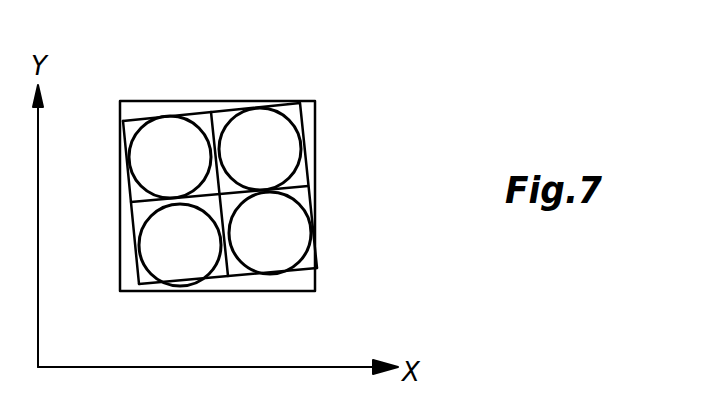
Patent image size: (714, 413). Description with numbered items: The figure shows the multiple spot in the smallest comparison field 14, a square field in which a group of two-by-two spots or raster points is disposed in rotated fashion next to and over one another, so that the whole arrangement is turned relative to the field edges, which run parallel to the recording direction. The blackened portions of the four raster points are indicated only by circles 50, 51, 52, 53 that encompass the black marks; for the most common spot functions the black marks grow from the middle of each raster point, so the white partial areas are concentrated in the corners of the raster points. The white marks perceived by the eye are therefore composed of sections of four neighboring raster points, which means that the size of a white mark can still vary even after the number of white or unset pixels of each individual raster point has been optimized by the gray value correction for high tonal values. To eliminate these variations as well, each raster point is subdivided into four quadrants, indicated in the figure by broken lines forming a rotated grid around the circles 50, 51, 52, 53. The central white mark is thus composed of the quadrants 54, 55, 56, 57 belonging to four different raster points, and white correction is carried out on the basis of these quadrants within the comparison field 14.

The smallest comparison field 14 is at (315, 167).
The circle encompassing black mark 50 is at (178, 262).
The circle encompassing black mark 51 is at (265, 258).
The circle encompassing black mark 52 is at (168, 138).
The circle encompassing black mark 53 is at (263, 123).
The quadrant 54 is at (147, 278).
The quadrant 55 is at (130, 195).
The quadrant 56 is at (300, 106).
The quadrant 57 is at (317, 268).